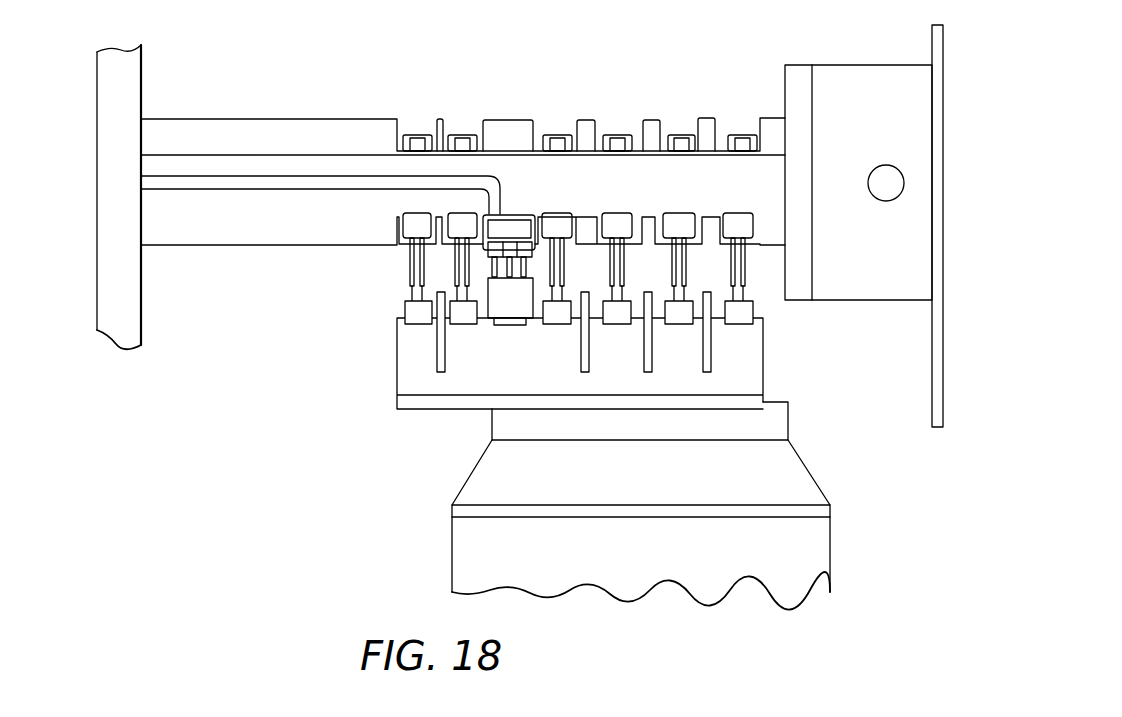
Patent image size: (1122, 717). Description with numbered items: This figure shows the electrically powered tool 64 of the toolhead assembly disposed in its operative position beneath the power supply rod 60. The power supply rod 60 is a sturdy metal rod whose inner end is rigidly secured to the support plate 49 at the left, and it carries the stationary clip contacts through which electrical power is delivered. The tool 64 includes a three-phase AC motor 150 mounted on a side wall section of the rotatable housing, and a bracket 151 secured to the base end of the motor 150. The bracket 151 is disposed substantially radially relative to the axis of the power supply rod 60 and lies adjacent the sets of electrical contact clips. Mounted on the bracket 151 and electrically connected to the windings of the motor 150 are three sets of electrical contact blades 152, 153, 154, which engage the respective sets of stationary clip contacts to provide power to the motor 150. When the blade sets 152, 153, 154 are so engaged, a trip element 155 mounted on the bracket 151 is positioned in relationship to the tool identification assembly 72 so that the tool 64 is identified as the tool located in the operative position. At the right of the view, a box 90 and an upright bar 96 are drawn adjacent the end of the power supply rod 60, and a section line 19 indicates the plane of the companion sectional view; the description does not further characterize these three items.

The support plate 49 is at (141, 323).
The power supply rod 60 is at (516, 112).
The tool identification assembly 72 is at (515, 228).
The set of electrical contact blades 152 is at (470, 290).
The set of electrical contact blades 153 is at (615, 270).
The set of electrical contact blades 154 is at (737, 277).
The trip element 155 is at (507, 310).
The bracket 151 is at (398, 380).
The electrically powered tool 64 is at (425, 497).
The AC motor 150 is at (452, 551).
The module / box 90 is at (875, 300).
The panel bar 96 is at (932, 380).
The section line for FIG. 19 is at (840, 357).